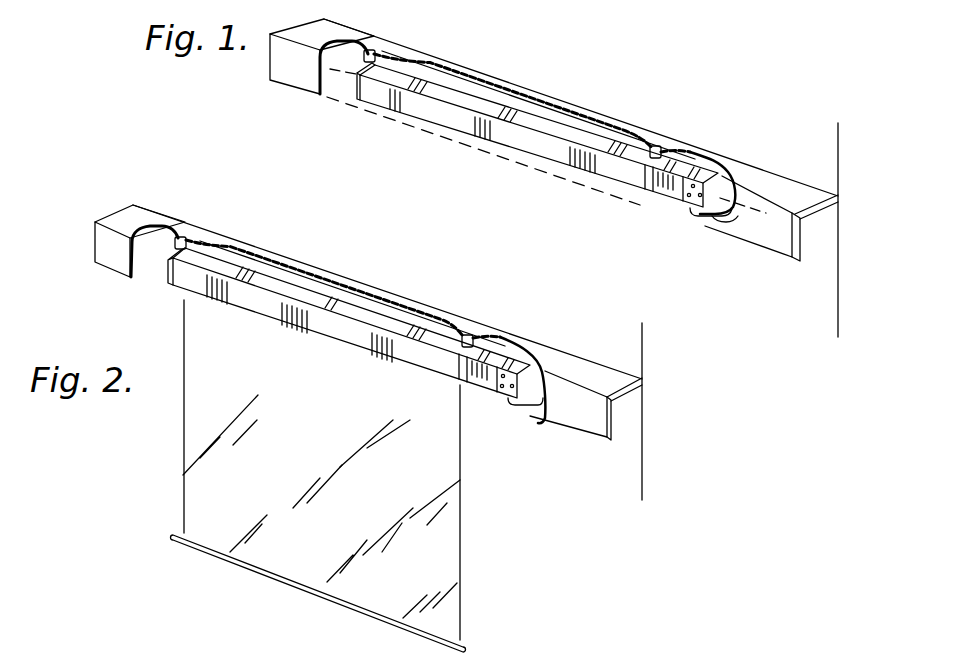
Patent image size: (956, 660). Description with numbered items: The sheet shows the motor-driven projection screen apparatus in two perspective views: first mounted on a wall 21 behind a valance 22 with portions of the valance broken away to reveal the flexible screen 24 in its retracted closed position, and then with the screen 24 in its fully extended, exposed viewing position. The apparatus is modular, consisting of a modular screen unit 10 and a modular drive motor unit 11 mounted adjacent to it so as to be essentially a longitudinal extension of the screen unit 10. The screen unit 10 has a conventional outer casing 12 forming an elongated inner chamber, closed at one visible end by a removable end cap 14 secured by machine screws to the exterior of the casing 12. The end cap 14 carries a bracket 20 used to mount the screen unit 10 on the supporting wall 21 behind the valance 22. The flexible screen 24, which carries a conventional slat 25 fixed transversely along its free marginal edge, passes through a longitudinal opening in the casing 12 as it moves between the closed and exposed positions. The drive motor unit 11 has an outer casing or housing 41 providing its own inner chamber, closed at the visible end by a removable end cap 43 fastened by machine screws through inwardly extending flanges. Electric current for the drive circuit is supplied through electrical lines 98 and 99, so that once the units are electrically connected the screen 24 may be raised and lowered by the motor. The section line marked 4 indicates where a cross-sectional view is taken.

In FIG. 1, the section line 4- 4 is at (343, 87).
In FIG. 1, the modular screen unit 10 is at (435, 126).
In FIG. 2, the modular screen unit 10 is at (267, 317).
In FIG. 1, the modular drive motor unit 11 is at (669, 201).
In FIG. 2, the modular drive motor unit 11 is at (477, 392).
In FIG. 1, the outer casing 12 is at (490, 130).
In FIG. 2, the outer casing 12 is at (392, 335).
In FIG. 1, the end cap 14 is at (353, 90).
In FIG. 2, the end cap 14 is at (163, 275).
In FIG. 1, the bracket 20 is at (372, 55).
In FIG. 2, the bracket 20 is at (182, 238).
In FIG. 1, the wall 21 is at (838, 299).
In FIG. 2, the wall 21 is at (642, 483).
In FIG. 1, the valance 22 is at (767, 230).
In FIG. 2, the valance 22 is at (572, 420).
In FIG. 2, the flexible screen 24 is at (447, 563).
In FIG. 2, the slat 25 is at (345, 602).
In FIG. 1, the outer casing or housing 41 is at (660, 190).
In FIG. 2, the outer casing or housing 41 is at (470, 370).
In FIG. 1, the end cap 43 is at (713, 173).
In FIG. 2, the end cap 43 is at (513, 370).
In FIG. 1, the electrical line 98 is at (698, 212).
In FIG. 1, the electrical line 99 is at (720, 217).